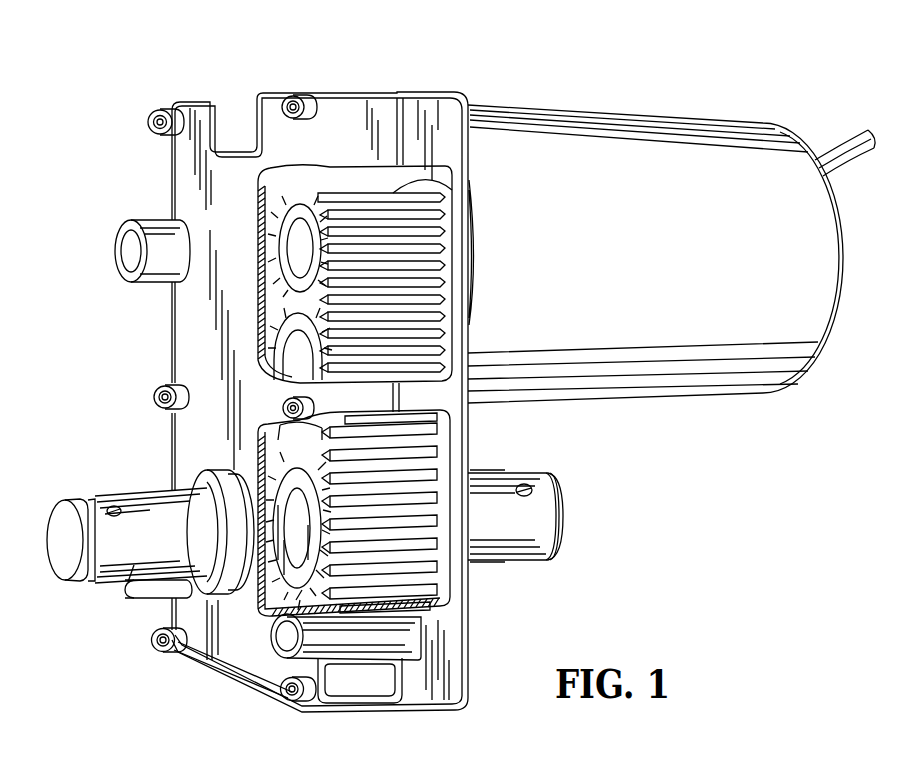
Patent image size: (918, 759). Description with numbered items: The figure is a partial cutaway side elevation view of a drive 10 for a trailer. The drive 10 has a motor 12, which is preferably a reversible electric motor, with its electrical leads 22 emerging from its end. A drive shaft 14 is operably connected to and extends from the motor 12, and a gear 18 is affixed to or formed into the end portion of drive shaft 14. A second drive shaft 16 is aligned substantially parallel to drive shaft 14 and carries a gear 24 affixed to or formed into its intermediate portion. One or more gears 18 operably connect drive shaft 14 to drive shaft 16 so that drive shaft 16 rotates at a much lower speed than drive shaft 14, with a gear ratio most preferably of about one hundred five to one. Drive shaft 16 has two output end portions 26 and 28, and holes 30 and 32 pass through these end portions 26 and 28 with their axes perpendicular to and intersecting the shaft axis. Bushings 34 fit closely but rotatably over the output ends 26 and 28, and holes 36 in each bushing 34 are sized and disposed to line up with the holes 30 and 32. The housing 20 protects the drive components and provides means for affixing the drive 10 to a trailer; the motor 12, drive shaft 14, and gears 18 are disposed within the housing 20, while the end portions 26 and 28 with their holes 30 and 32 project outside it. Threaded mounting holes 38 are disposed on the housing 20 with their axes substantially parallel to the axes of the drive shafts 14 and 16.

The drive 10 is at (164, 68).
The motor 12 is at (417, 188).
The drive shaft 14 is at (296, 240).
The drive shaft 16 is at (264, 603).
The gears 18 is at (292, 338).
The housing 20 is at (572, 156).
The leads 22 is at (847, 153).
The gear 24 is at (432, 576).
The end portion 26 is at (66, 562).
The end portion 28 is at (562, 538).
The hole 30 is at (116, 506).
The hole 32 is at (534, 494).
The bushings 34 is at (140, 592).
The holes 36 is at (128, 582).
The threaded mounting holes 38 is at (158, 226).